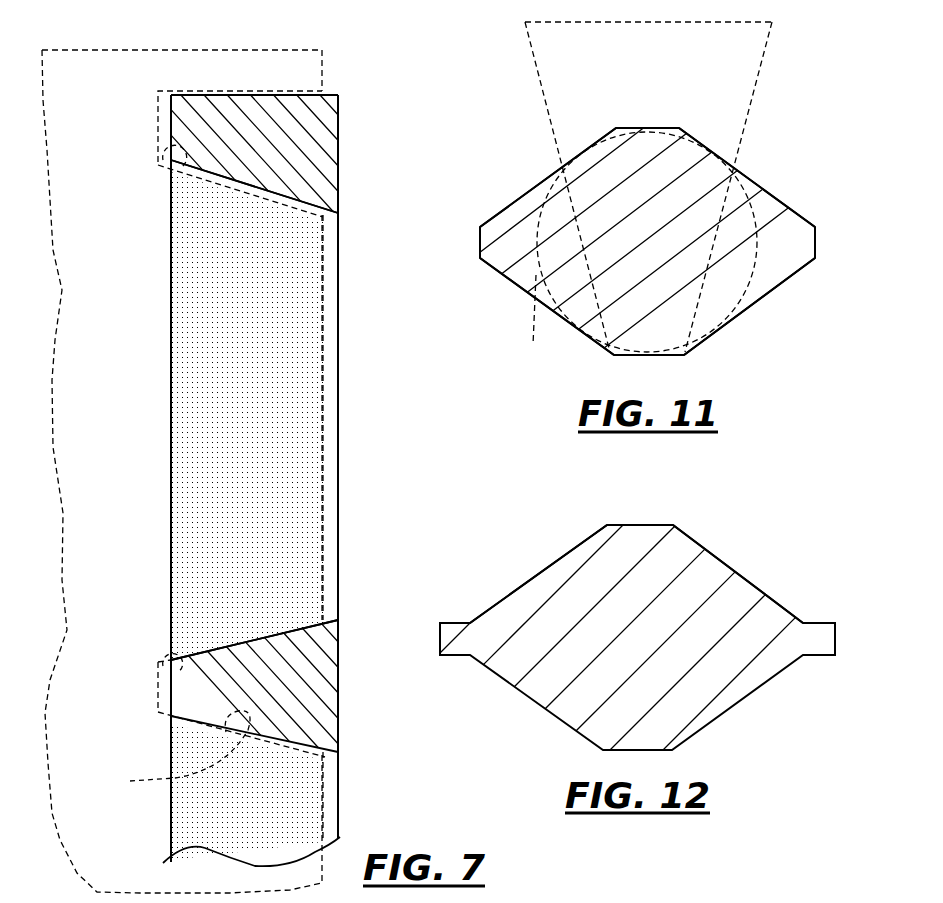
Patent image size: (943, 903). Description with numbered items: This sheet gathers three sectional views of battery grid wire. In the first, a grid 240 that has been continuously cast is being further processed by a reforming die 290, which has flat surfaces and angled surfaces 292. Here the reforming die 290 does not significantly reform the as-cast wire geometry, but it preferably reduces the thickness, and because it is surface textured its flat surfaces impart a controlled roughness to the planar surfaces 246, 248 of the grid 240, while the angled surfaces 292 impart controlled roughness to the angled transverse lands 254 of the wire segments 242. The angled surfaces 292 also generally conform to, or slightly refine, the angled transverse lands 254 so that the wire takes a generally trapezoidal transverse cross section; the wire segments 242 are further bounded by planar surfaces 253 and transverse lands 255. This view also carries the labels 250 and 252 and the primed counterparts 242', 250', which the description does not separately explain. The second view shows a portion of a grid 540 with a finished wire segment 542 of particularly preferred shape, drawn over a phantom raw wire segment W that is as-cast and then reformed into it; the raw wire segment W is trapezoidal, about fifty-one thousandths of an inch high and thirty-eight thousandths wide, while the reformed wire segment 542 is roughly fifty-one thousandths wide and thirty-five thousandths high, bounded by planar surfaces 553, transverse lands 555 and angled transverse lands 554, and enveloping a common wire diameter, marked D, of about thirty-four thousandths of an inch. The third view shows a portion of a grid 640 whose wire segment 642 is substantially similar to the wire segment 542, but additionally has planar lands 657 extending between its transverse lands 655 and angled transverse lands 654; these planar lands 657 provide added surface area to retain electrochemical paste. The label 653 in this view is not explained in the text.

In FIG. 7, the reforming die 290 is at (77, 50).
In FIG. 7, the grid 240 is at (146, 106).
In FIG. 7, the modified core member 242' is at (240, 116).
In FIG. 7, the modified hard material layer 250' is at (254, 154).
In FIG. 7, the transverse lands 255 is at (260, 95).
In FIG. 7, the planar surfaces 253 is at (338, 161).
In FIG. 7, the angled surfaces 292 is at (165, 155).
In FIG. 7, the angled transverse lands 254 is at (227, 180).
In FIG. 7, the planar surface 246 is at (170, 273).
In FIG. 7, the planar surface 248 is at (338, 333).
In FIG. 7, the wire segments 242 is at (196, 753).
In FIG. 7, the hard material layer 250 is at (254, 686).
In FIG. 7, the body portion 252 is at (251, 795).
In FIG. 11, the raw wire segment W is at (772, 22).
In FIG. 11, the diameter dimension D is at (528, 322).
In FIG. 11, the grid 540 is at (792, 127).
In FIG. 11, the wire segment 542 is at (683, 127).
In FIG. 11, the planar surfaces 553 is at (637, 127).
In FIG. 11, the angled transverse lands 554 is at (531, 190).
In FIG. 11, the transverse lands 555 is at (815, 241).
In FIG. 12, the grid 640 is at (641, 495).
In FIG. 12, the wire segment 642 is at (547, 680).
In FIG. 12, the flat face 653 is at (652, 524).
In FIG. 12, the angled transverse lands 654 is at (576, 547).
In FIG. 12, the transverse lands 655 is at (836, 624).
In FIG. 12, the planar lands 657 is at (456, 622).